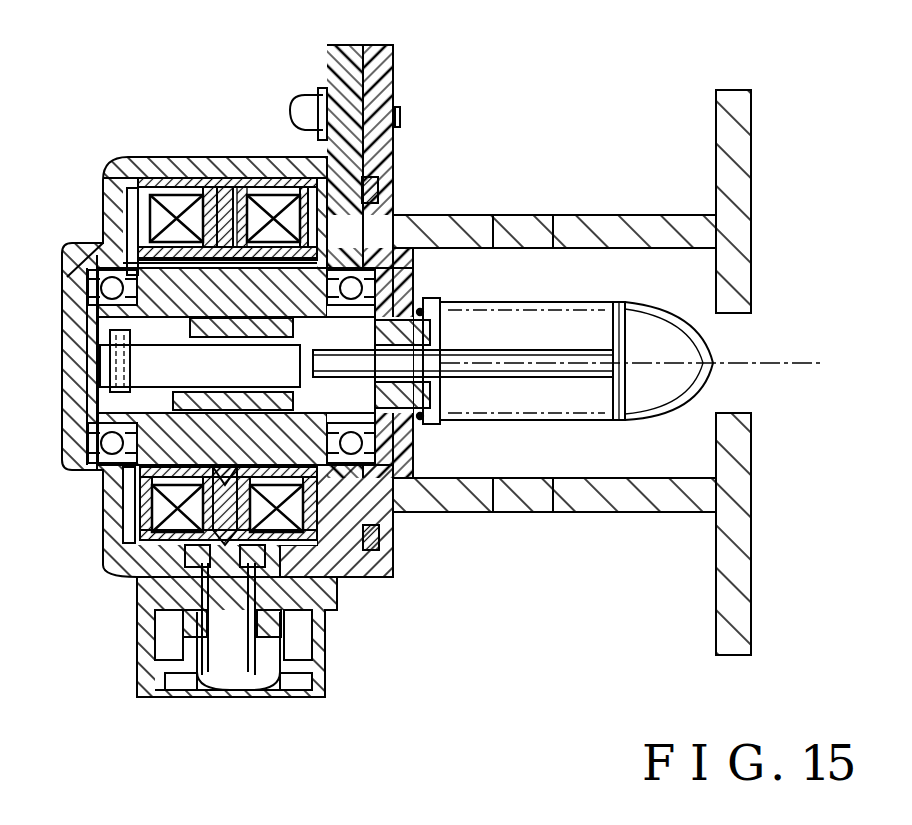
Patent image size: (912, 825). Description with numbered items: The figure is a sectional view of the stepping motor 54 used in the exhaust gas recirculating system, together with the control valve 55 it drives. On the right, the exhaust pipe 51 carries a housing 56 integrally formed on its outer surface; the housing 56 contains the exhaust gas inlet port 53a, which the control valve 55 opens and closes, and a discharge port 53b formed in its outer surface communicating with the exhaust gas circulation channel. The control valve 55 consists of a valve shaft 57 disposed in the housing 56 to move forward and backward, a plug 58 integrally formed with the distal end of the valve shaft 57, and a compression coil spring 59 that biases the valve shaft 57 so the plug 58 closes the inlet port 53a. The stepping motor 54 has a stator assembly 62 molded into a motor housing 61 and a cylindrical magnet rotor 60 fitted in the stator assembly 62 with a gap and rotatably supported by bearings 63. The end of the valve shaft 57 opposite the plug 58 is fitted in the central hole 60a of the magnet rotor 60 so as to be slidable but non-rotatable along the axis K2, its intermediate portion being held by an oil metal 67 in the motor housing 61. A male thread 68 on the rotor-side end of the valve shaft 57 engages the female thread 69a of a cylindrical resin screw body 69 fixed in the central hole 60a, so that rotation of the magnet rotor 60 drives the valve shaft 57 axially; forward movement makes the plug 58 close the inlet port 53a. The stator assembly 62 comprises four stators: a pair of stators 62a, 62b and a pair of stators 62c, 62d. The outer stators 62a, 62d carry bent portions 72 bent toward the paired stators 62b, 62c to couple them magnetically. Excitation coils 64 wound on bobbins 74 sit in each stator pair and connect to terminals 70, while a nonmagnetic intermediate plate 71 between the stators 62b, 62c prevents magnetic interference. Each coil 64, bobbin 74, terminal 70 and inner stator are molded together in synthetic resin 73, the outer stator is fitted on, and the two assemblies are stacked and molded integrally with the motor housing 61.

The exhaust pipe 51 is at (715, 135).
The exhaust gas inlet port 53a is at (735, 412).
The discharge port 53b is at (512, 247).
The stepping motor 54 is at (400, 80).
The control valve 55 is at (576, 372).
The housing 56 is at (573, 500).
The valve shaft 57 is at (517, 377).
The plug 58 is at (660, 425).
The compression coil spring 59 is at (617, 300).
The magnet rotor 60 is at (110, 487).
The central hole 60a is at (170, 402).
The motor housing 61 is at (143, 157).
The stator assembly 62 is at (343, 587).
The stator 62a is at (287, 148).
The stator 62b is at (390, 203).
The stator 62c is at (130, 228).
The stator 62d is at (166, 190).
The bearings 63 is at (395, 235).
The excitation coils 64 is at (270, 205).
The oil metal 67 is at (437, 420).
The male thread 68 is at (418, 418).
The screw body 69 is at (202, 330).
The female thread 69a is at (190, 385).
The terminals 70 is at (207, 665).
The intermediate plate 71 is at (223, 185).
The bent portions 72 is at (130, 567).
The synthetic resin 73 is at (180, 570).
The bobbins 74 is at (192, 198).
The axis K2 is at (780, 363).